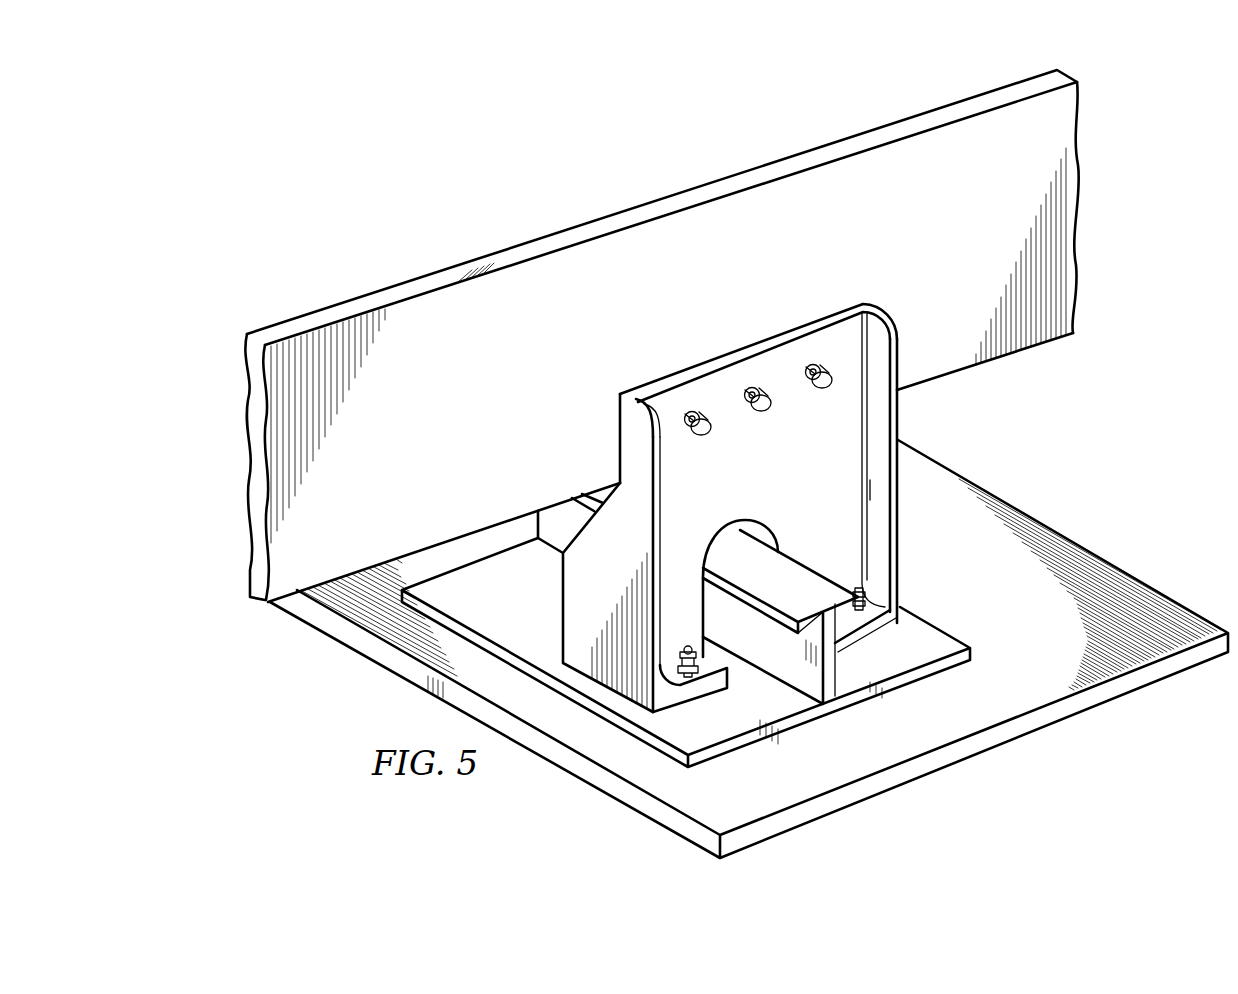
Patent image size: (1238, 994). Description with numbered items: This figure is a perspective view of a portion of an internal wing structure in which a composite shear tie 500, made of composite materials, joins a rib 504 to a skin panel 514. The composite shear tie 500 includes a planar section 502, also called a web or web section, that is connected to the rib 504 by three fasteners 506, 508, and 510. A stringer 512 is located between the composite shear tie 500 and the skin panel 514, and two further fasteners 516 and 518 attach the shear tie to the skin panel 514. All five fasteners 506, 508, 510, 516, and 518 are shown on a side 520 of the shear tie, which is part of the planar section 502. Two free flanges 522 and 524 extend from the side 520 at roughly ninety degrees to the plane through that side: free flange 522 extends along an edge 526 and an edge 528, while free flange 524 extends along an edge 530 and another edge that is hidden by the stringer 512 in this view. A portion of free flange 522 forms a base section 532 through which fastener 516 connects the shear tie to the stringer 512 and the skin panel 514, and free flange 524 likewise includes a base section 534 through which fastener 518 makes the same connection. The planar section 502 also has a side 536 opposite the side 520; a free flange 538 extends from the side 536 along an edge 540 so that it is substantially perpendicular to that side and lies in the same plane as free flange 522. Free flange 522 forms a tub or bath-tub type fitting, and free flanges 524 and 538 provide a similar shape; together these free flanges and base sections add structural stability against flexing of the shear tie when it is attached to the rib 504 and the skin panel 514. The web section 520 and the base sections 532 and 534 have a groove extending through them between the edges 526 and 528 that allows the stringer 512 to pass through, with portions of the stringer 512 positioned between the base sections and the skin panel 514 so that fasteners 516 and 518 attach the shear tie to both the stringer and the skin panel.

The composite shear tie 500 is at (698, 517).
The planar section 502 is at (780, 512).
The rib 504 is at (601, 210).
The fastener 506 is at (690, 410).
The fastener 508 is at (758, 413).
The fastener 510 is at (820, 394).
The stringer 512 is at (938, 618).
The skin panel 514 is at (1090, 547).
The fastener 516 is at (702, 666).
The fastener 518 is at (856, 590).
The side 520 is at (733, 380).
The free flange 522 is at (637, 553).
The free flange 524 is at (900, 420).
The edge 526 is at (617, 462).
The edge 528 is at (703, 605).
The edge 530 is at (872, 487).
The base section 532 is at (668, 693).
The base section 534 is at (862, 625).
The side 536 is at (826, 316).
The free flange 538 is at (563, 588).
The edge 540 is at (620, 437).